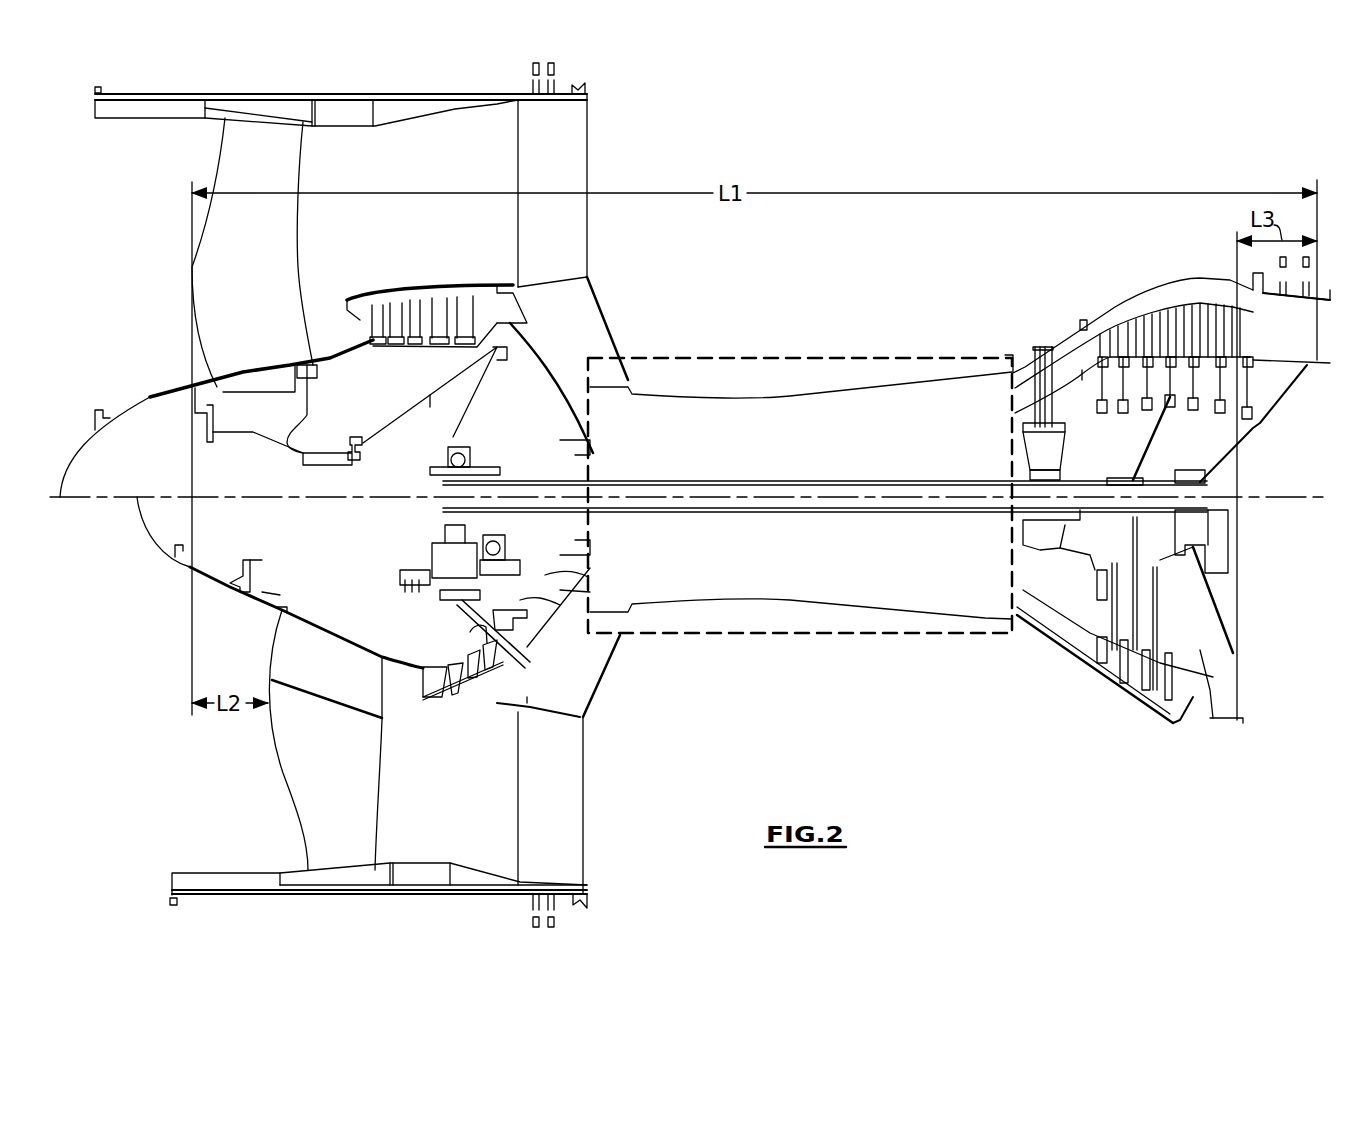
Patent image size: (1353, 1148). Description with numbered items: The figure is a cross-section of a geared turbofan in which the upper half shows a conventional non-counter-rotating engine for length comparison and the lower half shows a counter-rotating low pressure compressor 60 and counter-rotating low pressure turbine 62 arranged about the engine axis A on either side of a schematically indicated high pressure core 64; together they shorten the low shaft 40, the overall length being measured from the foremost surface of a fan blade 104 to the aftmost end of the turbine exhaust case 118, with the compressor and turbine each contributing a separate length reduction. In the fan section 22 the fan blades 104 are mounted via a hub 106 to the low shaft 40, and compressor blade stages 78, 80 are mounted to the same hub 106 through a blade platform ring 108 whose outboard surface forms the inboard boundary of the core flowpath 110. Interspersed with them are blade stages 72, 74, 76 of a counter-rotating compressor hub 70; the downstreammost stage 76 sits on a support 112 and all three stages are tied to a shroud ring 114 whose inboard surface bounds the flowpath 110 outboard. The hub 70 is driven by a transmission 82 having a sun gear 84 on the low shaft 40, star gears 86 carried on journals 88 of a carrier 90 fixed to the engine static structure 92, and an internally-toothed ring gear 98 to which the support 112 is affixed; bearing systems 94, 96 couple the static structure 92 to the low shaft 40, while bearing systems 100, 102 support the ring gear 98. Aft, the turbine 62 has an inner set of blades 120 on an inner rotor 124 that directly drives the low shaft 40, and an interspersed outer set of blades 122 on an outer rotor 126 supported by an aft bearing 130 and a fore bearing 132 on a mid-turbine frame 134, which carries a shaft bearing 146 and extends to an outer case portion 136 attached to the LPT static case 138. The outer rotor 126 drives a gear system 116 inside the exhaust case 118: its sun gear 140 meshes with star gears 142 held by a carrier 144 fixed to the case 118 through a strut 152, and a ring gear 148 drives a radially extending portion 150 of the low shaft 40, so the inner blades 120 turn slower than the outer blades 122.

The fan section 22 is at (262, 615).
The low shaft 40 is at (1215, 507).
The axis A is at (1293, 497).
The low pressure compressor 60 is at (398, 716).
The low pressure turbine 62 is at (1281, 760).
The high pressure core 64 is at (900, 350).
The counter-rotating compressor hub 70 is at (455, 614).
The blade stage 72 is at (395, 688).
The blade stage 74 is at (462, 700).
The blade stage 76 is at (512, 652).
The blade stage 78 is at (450, 700).
The blade stage 80 is at (487, 680).
The transmission 82 is at (410, 535).
The sun gear 84 is at (476, 545).
The star gears 86 is at (452, 548).
The journals 88 is at (502, 563).
The carrier 90 is at (575, 577).
The engine static structure 92 is at (545, 596).
The bearing system 94 is at (507, 553).
The bearing system 96 is at (350, 513).
The ring gear 98 is at (445, 590).
The bearing system 100 is at (400, 577).
The bearing system 102 is at (590, 592).
The fan blades 104 is at (303, 788).
The hub 106 is at (298, 562).
The blade platform ring 108 is at (380, 666).
The core flowpath 110 is at (517, 647).
The support 112 is at (476, 632).
The shroud ring 114 is at (472, 698).
The gear system 116 is at (1224, 590).
The turbine exhaust case 118 is at (1210, 720).
The inner set of blades 120 is at (1185, 645).
The outer set of blades 122 is at (1097, 680).
The inner rotor 124 is at (1195, 677).
The outer rotor 126 is at (1120, 690).
The bearing 130 is at (1167, 507).
The bearing 132 is at (1083, 570).
The mid-turbine frame 134 is at (1033, 587).
The outer case portion 136 is at (1053, 650).
The LPT static case 138 is at (1137, 707).
The sun gear 140 is at (1213, 522).
The star gears 142 is at (1215, 537).
The carrier 144 is at (1215, 544).
The shaft bearing 146 is at (1083, 507).
The ring gear 148 is at (1215, 573).
The portion 150 is at (1228, 552).
The strut 152 is at (1215, 623).